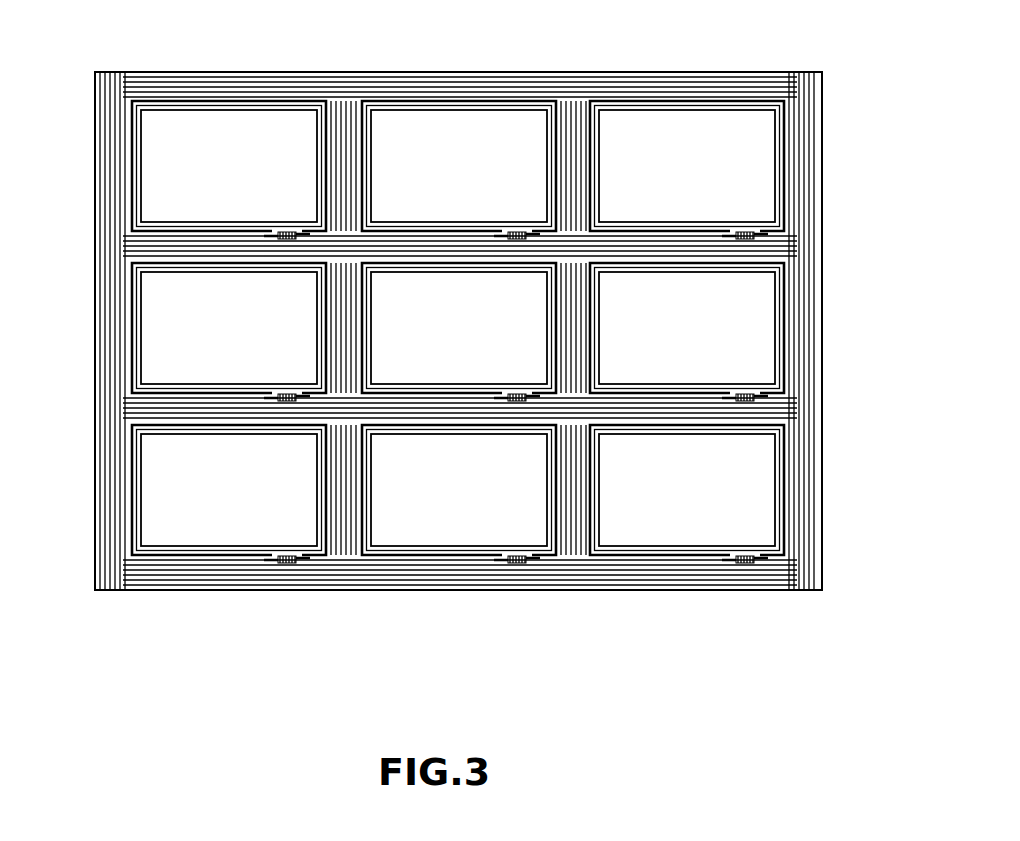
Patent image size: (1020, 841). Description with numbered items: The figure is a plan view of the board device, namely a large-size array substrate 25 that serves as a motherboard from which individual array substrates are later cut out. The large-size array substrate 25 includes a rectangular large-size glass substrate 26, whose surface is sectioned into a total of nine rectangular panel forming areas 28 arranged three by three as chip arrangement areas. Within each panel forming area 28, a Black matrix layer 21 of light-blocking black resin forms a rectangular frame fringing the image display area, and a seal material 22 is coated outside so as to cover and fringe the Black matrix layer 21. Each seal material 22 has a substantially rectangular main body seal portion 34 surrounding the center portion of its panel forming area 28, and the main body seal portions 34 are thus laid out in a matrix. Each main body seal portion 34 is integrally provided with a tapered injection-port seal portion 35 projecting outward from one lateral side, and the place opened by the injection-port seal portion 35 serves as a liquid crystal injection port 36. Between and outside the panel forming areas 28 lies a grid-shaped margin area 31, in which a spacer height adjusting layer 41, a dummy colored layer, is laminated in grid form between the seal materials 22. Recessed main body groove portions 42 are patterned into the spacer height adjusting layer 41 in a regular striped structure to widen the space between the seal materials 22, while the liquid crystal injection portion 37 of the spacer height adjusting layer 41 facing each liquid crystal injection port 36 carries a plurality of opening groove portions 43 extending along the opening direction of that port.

The Black matrix layer 21 is at (249, 111).
The seal material 22 is at (177, 106).
The large-size array substrate 25 is at (790, 71).
The large-size glass substrate 26 is at (823, 88).
The panel forming area 28 is at (286, 95).
The margin area 31 is at (340, 90).
The main body seal portion 34 is at (213, 110).
The injection-port seal portion 35 is at (287, 237).
The liquid crystal injection port 36 is at (292, 240).
The liquid crystal injection portion 37 is at (302, 234).
The spacer height adjusting layer 41 is at (139, 74).
The main body groove portion 42 is at (126, 152).
The opening groove portion 43 is at (272, 236).